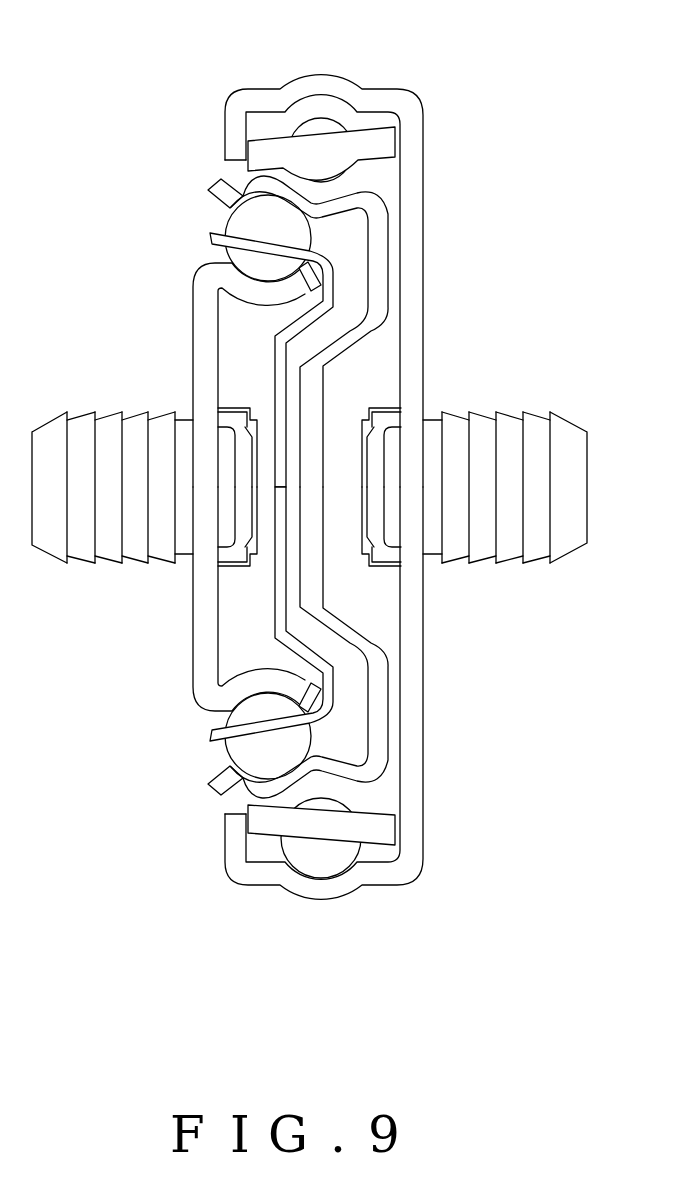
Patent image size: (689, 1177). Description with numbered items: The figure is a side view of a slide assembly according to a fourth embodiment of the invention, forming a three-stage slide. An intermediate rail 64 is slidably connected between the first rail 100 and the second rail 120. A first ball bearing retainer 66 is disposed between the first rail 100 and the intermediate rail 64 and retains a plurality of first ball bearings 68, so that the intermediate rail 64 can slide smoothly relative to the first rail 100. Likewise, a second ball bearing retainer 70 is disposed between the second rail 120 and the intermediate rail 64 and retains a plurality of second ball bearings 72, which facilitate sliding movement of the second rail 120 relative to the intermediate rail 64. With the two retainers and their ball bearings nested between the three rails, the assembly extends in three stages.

The first rail 100 is at (423, 129).
The second rail 120 is at (193, 308).
The intermediate rail 64 is at (383, 243).
The first ball bearing retainer 66 is at (378, 138).
The first ball bearings 68 is at (318, 108).
The second ball bearing retainer 70 is at (333, 283).
The second ball bearings 72 is at (253, 212).